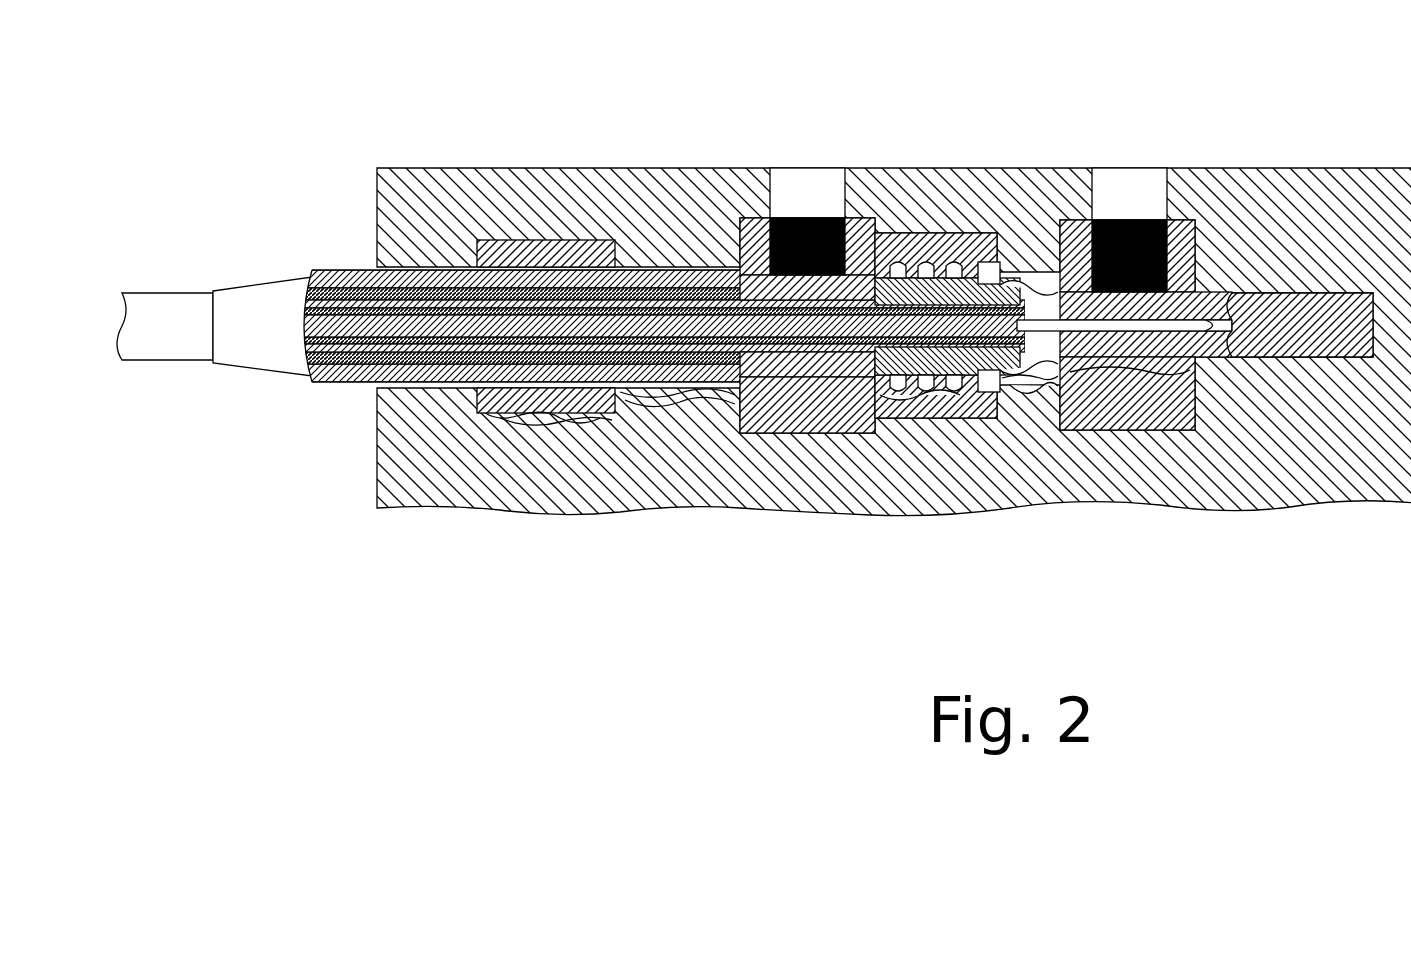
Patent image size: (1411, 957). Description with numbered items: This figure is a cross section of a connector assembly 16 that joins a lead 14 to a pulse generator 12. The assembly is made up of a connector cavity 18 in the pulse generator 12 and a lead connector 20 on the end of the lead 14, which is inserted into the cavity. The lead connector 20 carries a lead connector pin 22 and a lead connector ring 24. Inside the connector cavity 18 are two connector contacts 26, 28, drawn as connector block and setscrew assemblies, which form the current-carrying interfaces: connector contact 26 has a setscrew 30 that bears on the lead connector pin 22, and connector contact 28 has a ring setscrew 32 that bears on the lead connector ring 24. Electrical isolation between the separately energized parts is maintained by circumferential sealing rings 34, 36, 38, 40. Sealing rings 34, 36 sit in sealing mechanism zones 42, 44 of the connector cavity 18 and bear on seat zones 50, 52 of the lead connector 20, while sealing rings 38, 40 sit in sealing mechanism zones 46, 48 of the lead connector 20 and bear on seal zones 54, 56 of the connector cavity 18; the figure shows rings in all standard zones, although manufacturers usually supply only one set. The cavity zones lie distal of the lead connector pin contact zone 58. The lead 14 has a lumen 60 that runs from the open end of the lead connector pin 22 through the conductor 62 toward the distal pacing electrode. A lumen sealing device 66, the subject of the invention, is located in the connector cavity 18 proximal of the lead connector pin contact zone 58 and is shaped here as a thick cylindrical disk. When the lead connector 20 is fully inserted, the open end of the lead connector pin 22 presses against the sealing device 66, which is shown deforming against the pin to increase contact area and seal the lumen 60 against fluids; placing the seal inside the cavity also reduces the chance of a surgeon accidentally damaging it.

The pulse generator 12 is at (398, 456).
The lead 14 is at (180, 388).
The connector assembly 16 is at (426, 598).
The connector cavity 18 is at (377, 268).
The lead connector 20 is at (348, 385).
The lead connector pin 22 is at (1233, 292).
The lead connector ring 24 is at (903, 233).
The connector contact 26 is at (1180, 220).
The connector contact 28 is at (753, 218).
The setscrew 30 is at (1128, 220).
The ring setscrew 32 is at (820, 218).
The sealing ring 34 is at (580, 240).
The sealing ring 36 is at (987, 283).
The sealing ring 38 is at (718, 268).
The sealing ring 40 is at (1047, 272).
The sealing mechanism zone 42 is at (543, 413).
The sealing mechanism zone 44 is at (935, 410).
The sealing mechanism zone 46 is at (685, 412).
The sealing mechanism zone 48 is at (1030, 395).
The seat zone 50 is at (550, 418).
The seat zone 52 is at (900, 433).
The seal zone 54 is at (680, 412).
The seal zone 56 is at (1040, 395).
The lead connector pin contact zone 58 is at (1120, 372).
The lumen 60 is at (1215, 334).
The conductor 62 is at (292, 322).
The lumen sealing device 66 is at (1317, 292).